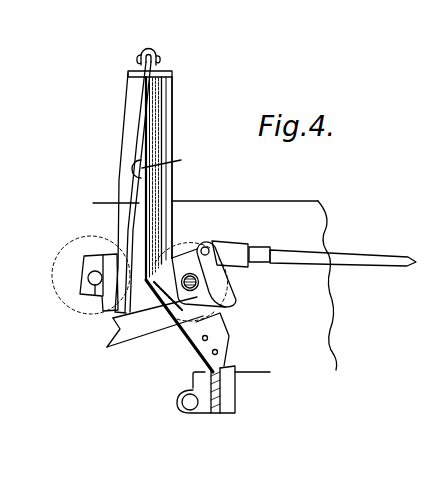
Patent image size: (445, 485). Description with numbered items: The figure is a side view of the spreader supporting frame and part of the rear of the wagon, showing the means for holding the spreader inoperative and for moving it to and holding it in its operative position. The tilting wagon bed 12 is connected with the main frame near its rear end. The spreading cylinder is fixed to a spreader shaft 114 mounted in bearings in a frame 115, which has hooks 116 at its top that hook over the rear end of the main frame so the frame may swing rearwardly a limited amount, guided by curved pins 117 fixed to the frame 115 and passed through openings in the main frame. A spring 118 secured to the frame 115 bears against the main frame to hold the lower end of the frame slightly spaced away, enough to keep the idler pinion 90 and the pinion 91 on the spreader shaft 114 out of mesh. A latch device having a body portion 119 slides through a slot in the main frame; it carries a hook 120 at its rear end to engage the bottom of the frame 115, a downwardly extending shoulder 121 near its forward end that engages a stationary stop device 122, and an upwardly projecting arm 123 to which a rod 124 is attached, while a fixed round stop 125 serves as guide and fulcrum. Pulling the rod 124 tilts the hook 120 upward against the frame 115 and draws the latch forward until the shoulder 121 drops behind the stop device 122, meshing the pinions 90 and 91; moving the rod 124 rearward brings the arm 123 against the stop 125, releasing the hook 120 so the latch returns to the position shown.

The tilting wagon bed 12 is at (254, 285).
The idler pinion 90 is at (226, 232).
The pinion 91 is at (73, 255).
The spreader shaft 114 is at (92, 281).
The frame 115 is at (127, 134).
The hooks 116 is at (153, 46).
The curved pins 117 is at (175, 160).
The spring 118 is at (102, 202).
The body portion 119 is at (156, 324).
The hook 120 is at (112, 318).
The shoulder 121 is at (226, 312).
The stop device 122 is at (229, 338).
The arm 123 is at (234, 270).
The rod 124 is at (366, 259).
The round stop 125 is at (216, 286).